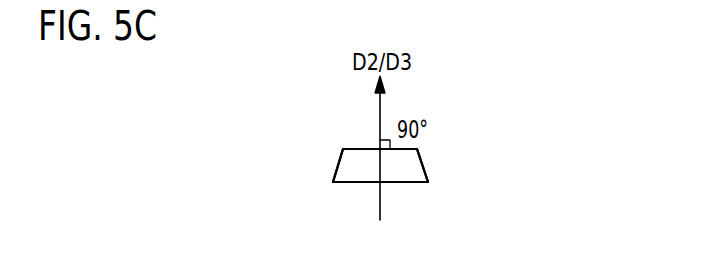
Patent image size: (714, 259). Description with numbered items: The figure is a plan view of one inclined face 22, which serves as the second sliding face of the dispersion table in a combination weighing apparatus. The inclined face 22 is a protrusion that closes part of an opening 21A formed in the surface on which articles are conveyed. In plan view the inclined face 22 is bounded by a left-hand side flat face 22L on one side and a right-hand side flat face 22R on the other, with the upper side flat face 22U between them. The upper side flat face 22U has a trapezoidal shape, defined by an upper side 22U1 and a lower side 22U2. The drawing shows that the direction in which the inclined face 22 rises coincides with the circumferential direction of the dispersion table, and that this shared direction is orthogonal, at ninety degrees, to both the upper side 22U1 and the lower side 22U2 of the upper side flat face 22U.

The second sliding face 22 is at (356, 169).
The opening 21A is at (355, 146).
The left-hand side flat face 22L is at (341, 157).
The right-hand side flat face 22R is at (424, 170).
The upper side flat face 22U is at (398, 167).
The upper side 22U1 is at (373, 150).
The lower side 22U2 is at (350, 183).